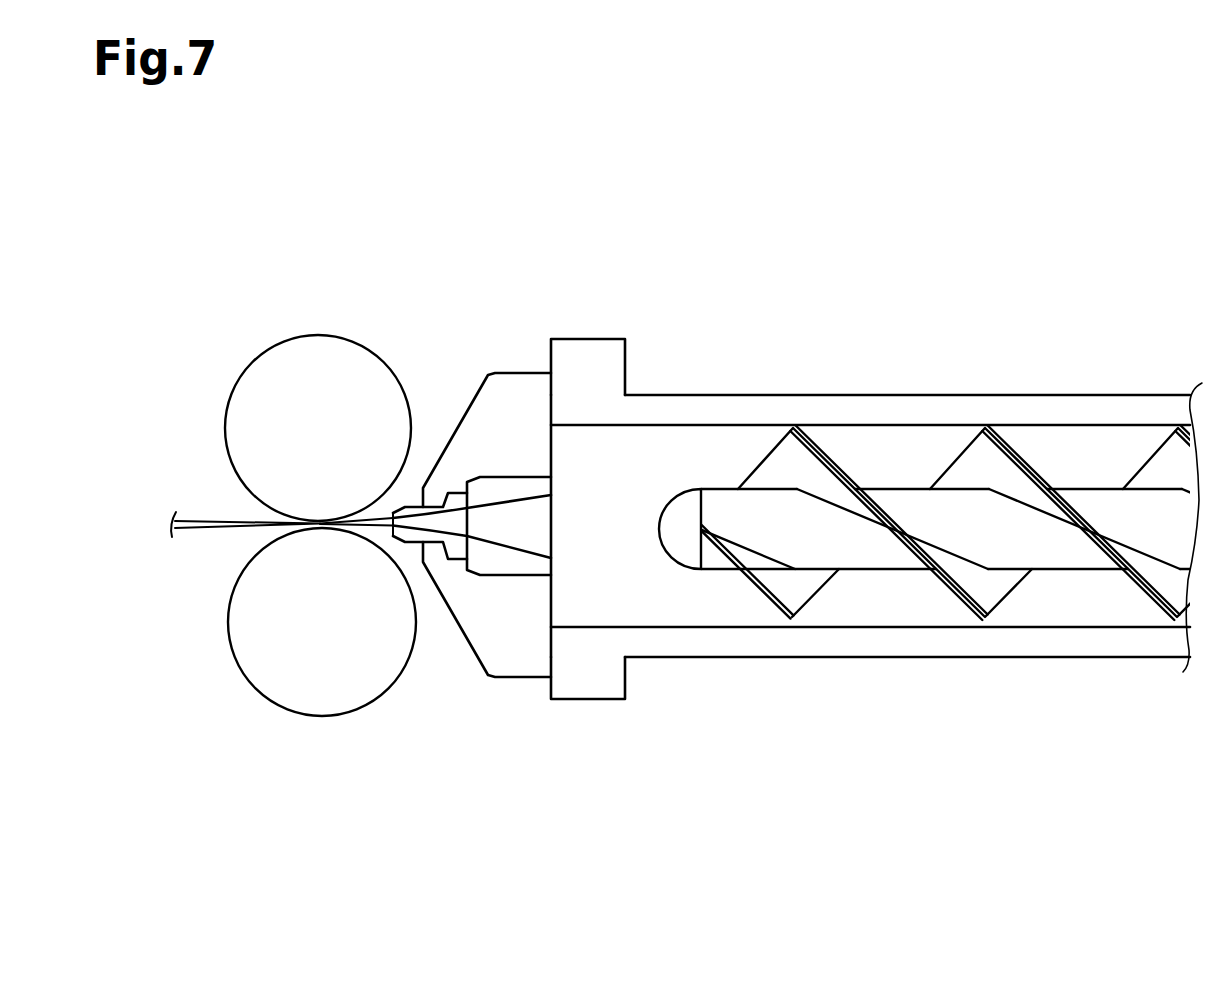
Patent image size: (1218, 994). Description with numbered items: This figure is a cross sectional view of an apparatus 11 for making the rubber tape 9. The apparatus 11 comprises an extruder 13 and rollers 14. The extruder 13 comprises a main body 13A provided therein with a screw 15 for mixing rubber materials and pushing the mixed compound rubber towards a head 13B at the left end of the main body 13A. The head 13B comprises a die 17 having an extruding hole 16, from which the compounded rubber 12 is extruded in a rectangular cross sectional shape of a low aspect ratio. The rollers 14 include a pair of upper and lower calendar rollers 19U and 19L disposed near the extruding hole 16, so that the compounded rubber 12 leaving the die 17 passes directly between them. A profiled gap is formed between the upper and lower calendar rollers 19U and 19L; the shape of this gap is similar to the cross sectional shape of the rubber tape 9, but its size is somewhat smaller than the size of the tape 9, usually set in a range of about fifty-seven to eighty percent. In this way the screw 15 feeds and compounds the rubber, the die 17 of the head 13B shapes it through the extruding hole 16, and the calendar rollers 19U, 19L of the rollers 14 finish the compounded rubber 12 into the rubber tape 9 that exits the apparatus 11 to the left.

The rubber tape 9 is at (200, 527).
The apparatus 11 is at (633, 838).
The compounded rubber 12 is at (380, 530).
The extruder 13 is at (777, 527).
The main body 13A is at (955, 395).
The head 13B is at (513, 373).
The rollers 14 is at (330, 560).
The screw 15 is at (1105, 488).
The extruding hole 16 is at (390, 514).
The die 17 is at (458, 493).
The upper calendar roller 19U is at (242, 370).
The lower calendar roller 19L is at (248, 682).